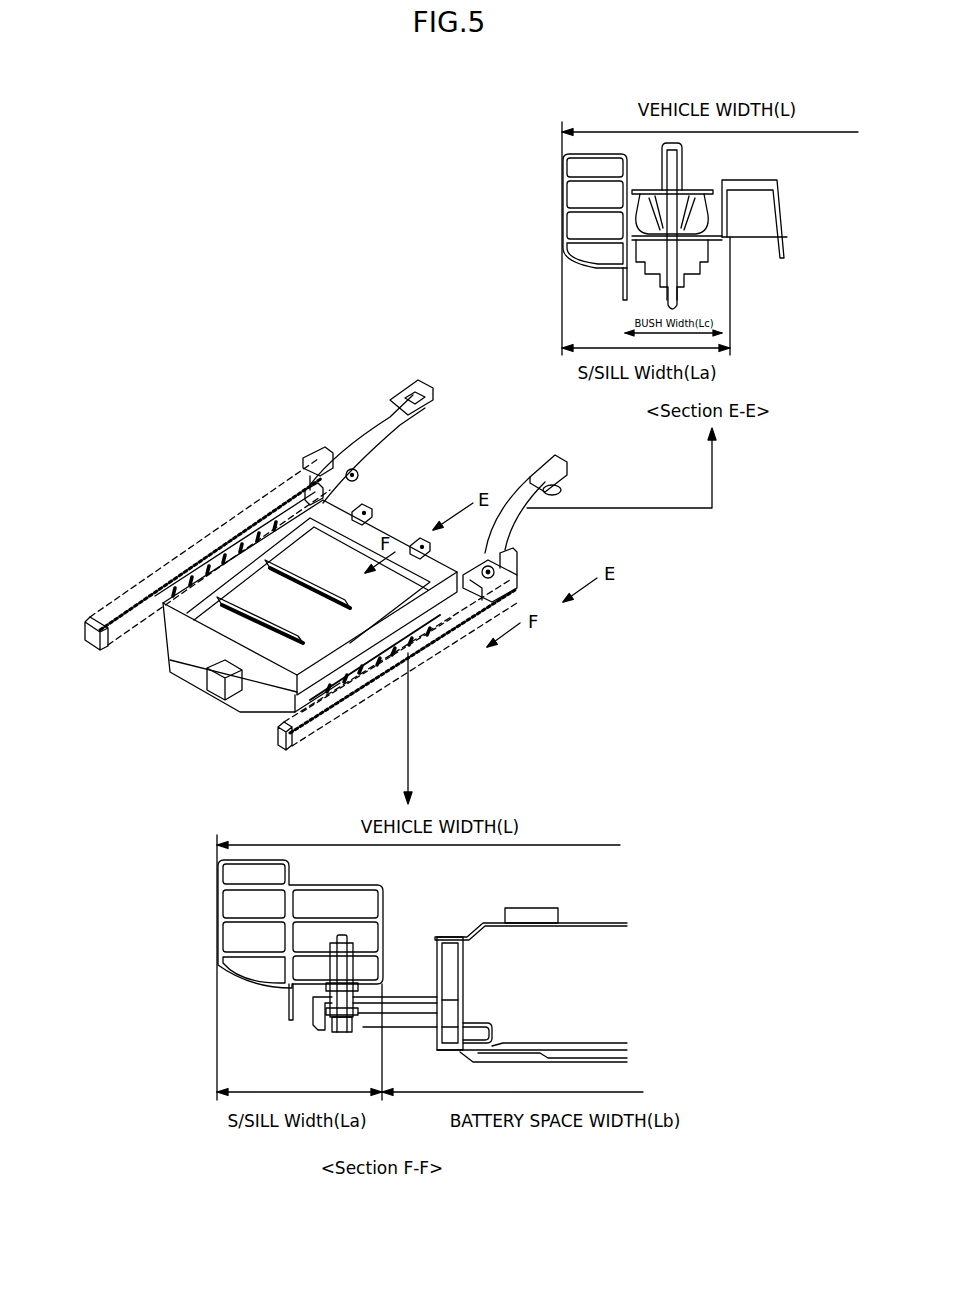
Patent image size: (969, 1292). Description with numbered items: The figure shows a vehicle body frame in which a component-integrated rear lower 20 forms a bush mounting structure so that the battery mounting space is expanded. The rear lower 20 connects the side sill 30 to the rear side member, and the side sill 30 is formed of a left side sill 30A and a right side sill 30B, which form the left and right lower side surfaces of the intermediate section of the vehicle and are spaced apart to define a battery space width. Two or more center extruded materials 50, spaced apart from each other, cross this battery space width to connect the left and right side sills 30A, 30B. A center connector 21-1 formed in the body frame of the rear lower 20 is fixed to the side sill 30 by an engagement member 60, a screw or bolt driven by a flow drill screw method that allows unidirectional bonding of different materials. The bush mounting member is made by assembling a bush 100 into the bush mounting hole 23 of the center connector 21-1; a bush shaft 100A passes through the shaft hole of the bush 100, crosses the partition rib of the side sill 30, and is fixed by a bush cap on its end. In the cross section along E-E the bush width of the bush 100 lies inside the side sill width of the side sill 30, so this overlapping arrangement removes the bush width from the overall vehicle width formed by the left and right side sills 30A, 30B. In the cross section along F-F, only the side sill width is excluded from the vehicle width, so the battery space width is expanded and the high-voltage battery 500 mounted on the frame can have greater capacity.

The rear lower 20 is at (530, 475).
The center connector 21-1 is at (725, 213).
The bush mounting hole 23 is at (645, 260).
The side sill 30 is at (575, 200).
The left side sill 30A is at (122, 630).
The right side sill 30B is at (317, 725).
The center extruded material 50 is at (380, 625).
The engagement member 60 is at (333, 958).
The bush 100 is at (710, 262).
The bush shaft 100A is at (673, 172).
The high-voltage battery 500 is at (257, 682).